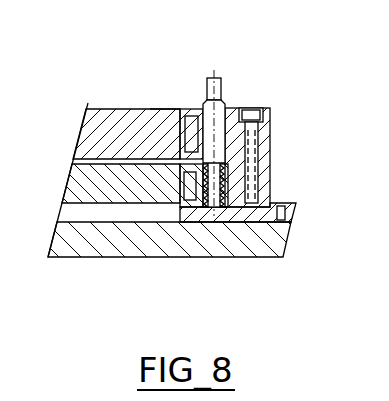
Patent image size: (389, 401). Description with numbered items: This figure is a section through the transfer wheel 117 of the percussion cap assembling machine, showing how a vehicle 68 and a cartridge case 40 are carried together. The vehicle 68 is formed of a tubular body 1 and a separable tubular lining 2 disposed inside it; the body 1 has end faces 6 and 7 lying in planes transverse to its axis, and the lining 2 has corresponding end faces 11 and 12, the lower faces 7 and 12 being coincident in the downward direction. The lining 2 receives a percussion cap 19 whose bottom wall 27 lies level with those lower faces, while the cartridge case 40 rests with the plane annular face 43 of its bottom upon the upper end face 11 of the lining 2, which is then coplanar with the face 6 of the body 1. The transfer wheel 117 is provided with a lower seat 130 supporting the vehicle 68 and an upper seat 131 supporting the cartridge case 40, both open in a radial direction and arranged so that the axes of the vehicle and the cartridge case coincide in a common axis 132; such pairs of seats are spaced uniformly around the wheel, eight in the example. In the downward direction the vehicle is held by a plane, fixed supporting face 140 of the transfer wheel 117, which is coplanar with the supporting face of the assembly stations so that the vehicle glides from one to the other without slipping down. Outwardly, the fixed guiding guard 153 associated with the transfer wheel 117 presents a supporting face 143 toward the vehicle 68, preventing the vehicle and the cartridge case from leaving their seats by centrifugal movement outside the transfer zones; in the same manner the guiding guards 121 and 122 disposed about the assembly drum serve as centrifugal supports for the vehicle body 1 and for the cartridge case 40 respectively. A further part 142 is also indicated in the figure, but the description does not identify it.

The body 1 is at (266, 235).
The lining 2 is at (172, 192).
The end face of body 6 is at (172, 156).
The end face of body 7 is at (238, 248).
The end face of lining 11 is at (227, 79).
The end face of lining 12 is at (268, 212).
The percussion cap 19 is at (205, 208).
The bottom wall 27 is at (214, 208).
The cartridge case 40 is at (239, 114).
The plane annular face 43 is at (286, 155).
The vehicle 68 is at (270, 227).
The transfer wheel 117 is at (90, 141).
The guiding guard 121 is at (187, 188).
The guiding guard 122 is at (193, 127).
The lower seat 130 is at (159, 230).
The upper seat 131 is at (170, 108).
The axis 132 is at (239, 114).
The supporting face 140 is at (261, 248).
The fixing screw 142 is at (284, 137).
The supporting face 143 is at (233, 203).
The guiding guard 153 is at (281, 125).